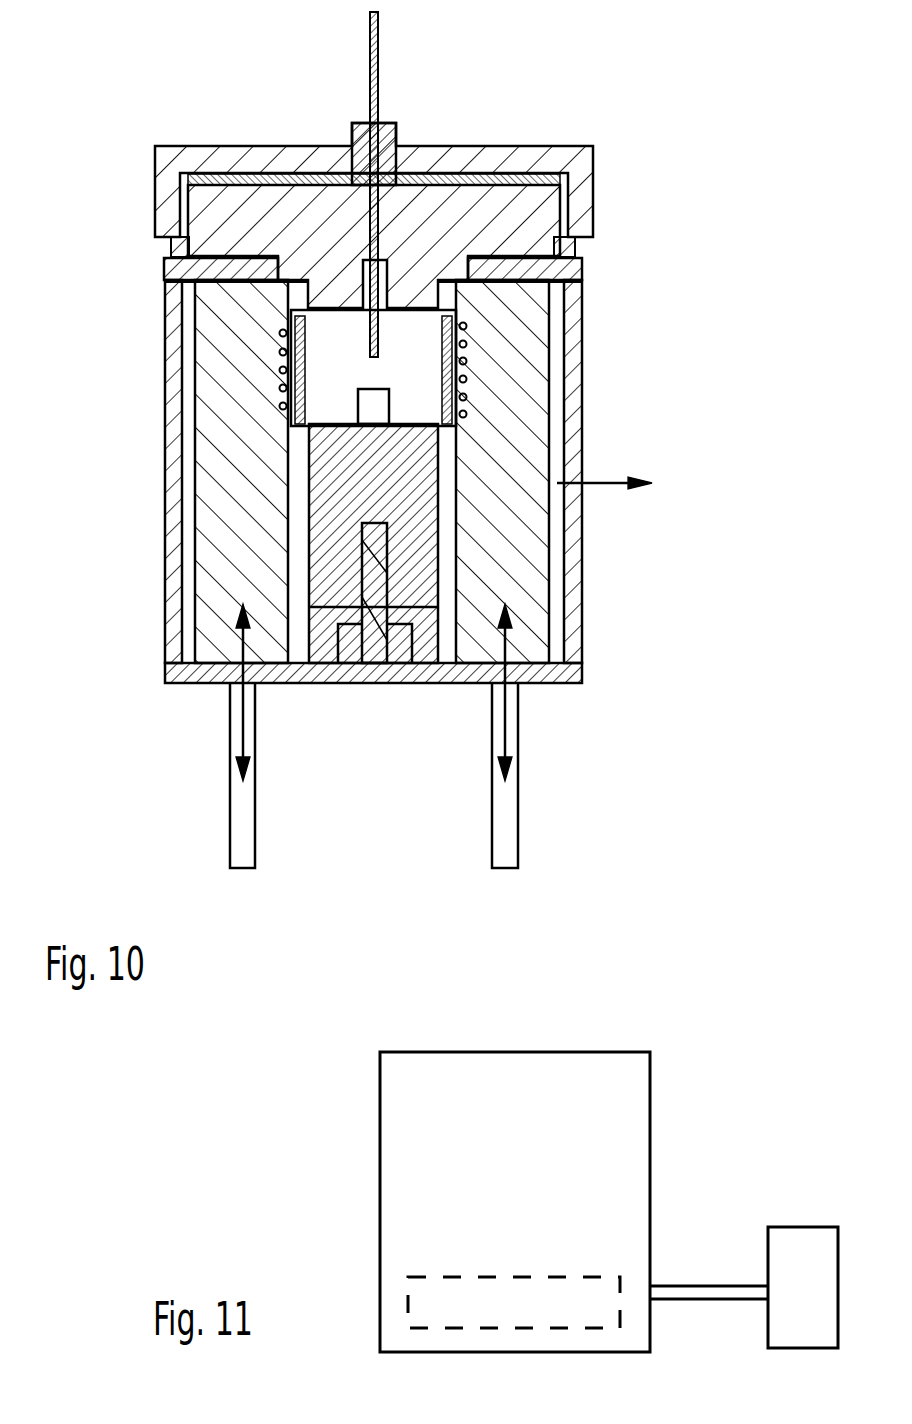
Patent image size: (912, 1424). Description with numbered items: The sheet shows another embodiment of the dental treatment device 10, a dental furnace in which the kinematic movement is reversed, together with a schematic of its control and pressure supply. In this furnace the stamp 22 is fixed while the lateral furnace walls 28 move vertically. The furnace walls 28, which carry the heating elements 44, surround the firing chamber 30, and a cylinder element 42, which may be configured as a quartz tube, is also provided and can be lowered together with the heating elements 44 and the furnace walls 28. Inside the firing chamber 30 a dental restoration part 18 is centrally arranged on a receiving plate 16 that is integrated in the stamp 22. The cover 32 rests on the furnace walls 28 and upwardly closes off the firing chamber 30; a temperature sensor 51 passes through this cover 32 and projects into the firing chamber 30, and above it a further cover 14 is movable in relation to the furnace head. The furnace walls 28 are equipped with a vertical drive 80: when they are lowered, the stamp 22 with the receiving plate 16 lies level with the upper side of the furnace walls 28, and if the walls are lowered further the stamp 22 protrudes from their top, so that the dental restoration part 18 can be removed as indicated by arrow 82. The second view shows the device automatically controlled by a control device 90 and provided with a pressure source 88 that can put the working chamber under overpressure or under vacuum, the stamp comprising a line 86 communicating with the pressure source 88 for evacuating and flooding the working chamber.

In FIG. 10, the dental treatment device 10 is at (176, 773).
In FIG. 11, the dental treatment device 10 is at (609, 995).
In FIG. 10, the cover 14 is at (242, 160).
In FIG. 10, the receiving plate 16 is at (323, 413).
In FIG. 10, the dental restoration part 18 is at (377, 400).
In FIG. 10, the stamp 22 is at (337, 585).
In FIG. 10, the furnace walls 28 is at (523, 553).
In FIG. 10, the firing chamber 30 is at (330, 350).
In FIG. 10, the cover 32 is at (302, 207).
In FIG. 10, the cylinder element 42 is at (467, 333).
In FIG. 10, the heating elements 44 is at (467, 382).
In FIG. 10, the temperature sensor 51 is at (380, 38).
In FIG. 10, the vertical drive 80 is at (505, 733).
In FIG. 10, the arrow 82 is at (609, 480).
In FIG. 11, the line 86 is at (702, 1283).
In FIG. 11, the pressure source 88 is at (818, 1302).
In FIG. 11, the control device 90 is at (537, 1313).